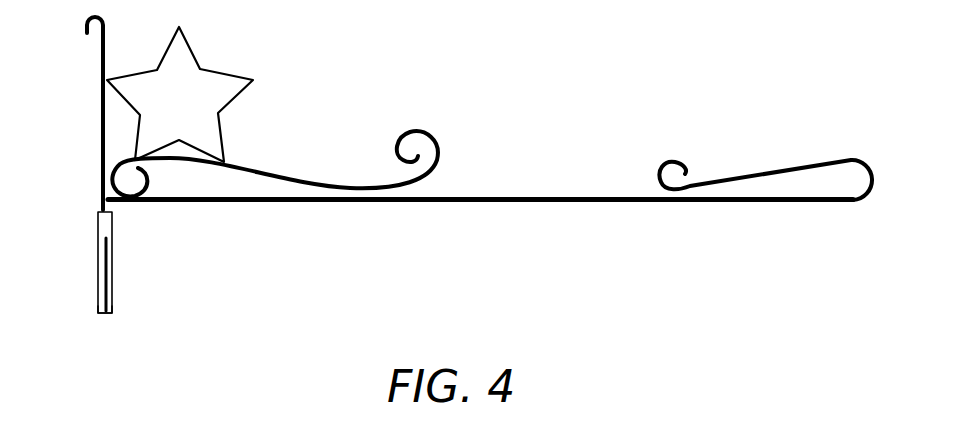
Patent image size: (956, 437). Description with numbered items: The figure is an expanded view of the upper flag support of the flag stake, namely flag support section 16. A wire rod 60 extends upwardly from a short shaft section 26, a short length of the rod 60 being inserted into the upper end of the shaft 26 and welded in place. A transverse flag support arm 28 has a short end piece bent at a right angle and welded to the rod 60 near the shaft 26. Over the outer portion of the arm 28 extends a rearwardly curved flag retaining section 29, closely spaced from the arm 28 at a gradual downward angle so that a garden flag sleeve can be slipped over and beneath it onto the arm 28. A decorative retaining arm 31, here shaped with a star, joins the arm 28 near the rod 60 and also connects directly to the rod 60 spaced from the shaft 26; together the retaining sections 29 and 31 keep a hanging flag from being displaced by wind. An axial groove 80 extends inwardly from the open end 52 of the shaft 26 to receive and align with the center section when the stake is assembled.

The flag support section 16 is at (490, 232).
The short shaft section 26 is at (105, 228).
The transverse flag support arm 28 is at (560, 203).
The rearwardly curved flag retaining section 29 is at (782, 170).
The decorative retaining arm 31 is at (290, 172).
The open end 52 is at (103, 316).
The wire rod 60 is at (102, 152).
The axial groove 80 is at (108, 270).